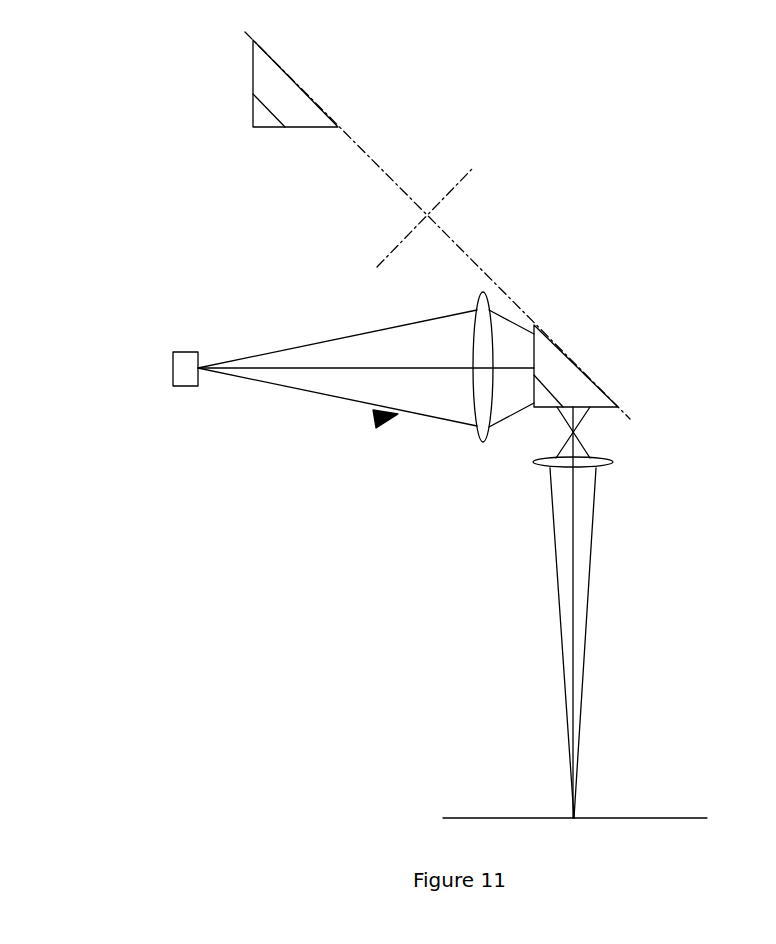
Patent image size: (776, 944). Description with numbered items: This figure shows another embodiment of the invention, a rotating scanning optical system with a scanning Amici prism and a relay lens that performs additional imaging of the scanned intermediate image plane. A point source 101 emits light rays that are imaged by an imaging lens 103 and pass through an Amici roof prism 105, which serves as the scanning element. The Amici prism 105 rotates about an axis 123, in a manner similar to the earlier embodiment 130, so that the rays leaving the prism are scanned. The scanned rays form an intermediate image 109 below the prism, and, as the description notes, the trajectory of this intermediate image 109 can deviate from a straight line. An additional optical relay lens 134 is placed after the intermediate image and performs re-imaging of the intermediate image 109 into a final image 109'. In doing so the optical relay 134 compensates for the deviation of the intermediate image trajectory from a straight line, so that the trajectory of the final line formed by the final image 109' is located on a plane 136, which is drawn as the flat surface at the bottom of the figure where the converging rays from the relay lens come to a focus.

The point source 101 is at (173, 360).
The imaging lens 103 is at (490, 300).
The Amici roof prism 105 is at (262, 52).
The intermediate image 109 is at (610, 612).
The final image 109' is at (613, 643).
The axis 123 is at (447, 181).
The embodiment 130 is at (376, 420).
The optical relay lens 134 is at (531, 456).
The plane 136 is at (522, 818).